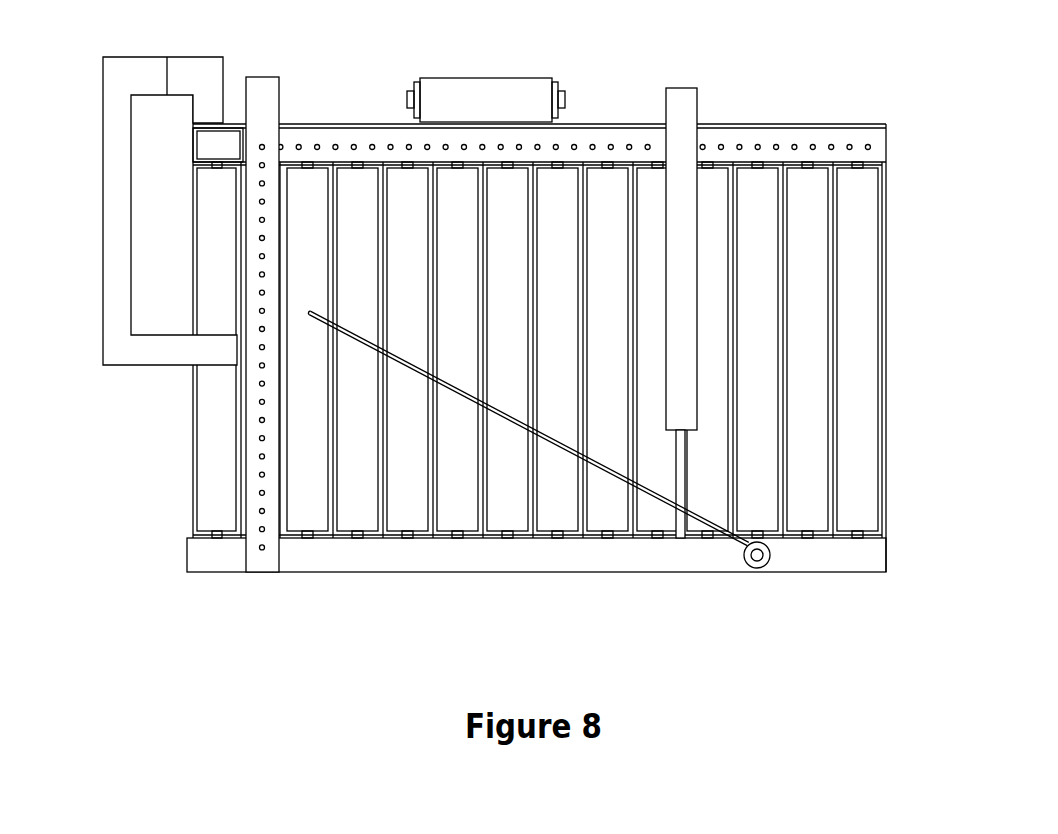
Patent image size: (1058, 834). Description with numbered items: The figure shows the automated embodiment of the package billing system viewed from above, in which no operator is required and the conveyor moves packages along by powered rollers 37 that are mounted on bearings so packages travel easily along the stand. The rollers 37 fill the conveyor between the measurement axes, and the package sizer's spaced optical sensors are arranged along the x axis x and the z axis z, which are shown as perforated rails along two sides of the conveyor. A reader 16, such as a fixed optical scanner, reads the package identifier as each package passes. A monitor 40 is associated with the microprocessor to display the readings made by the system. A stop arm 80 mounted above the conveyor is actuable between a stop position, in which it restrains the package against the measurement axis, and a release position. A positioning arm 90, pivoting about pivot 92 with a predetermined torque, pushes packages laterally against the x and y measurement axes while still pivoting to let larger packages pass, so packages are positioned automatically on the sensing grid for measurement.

The reader 16 is at (690, 110).
The rollers 37 is at (858, 339).
The monitor 40 is at (517, 93).
The stop arm 80 is at (117, 292).
The positioning arm 90 is at (568, 450).
The pivot 92 is at (752, 568).
The x axis x is at (875, 140).
The z axis z is at (261, 560).